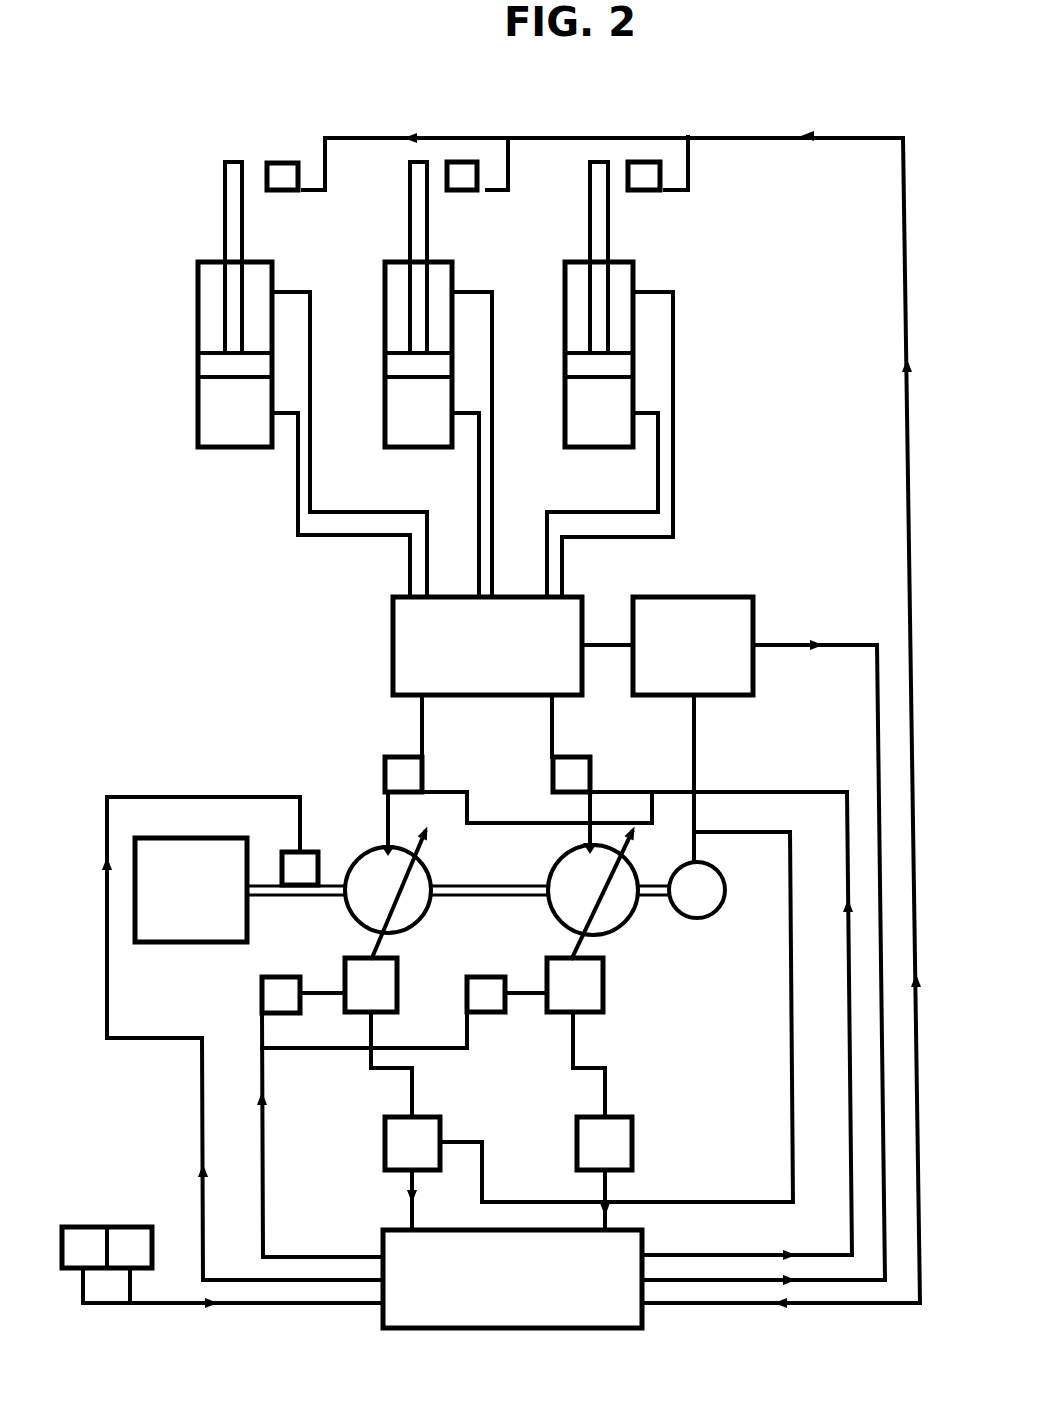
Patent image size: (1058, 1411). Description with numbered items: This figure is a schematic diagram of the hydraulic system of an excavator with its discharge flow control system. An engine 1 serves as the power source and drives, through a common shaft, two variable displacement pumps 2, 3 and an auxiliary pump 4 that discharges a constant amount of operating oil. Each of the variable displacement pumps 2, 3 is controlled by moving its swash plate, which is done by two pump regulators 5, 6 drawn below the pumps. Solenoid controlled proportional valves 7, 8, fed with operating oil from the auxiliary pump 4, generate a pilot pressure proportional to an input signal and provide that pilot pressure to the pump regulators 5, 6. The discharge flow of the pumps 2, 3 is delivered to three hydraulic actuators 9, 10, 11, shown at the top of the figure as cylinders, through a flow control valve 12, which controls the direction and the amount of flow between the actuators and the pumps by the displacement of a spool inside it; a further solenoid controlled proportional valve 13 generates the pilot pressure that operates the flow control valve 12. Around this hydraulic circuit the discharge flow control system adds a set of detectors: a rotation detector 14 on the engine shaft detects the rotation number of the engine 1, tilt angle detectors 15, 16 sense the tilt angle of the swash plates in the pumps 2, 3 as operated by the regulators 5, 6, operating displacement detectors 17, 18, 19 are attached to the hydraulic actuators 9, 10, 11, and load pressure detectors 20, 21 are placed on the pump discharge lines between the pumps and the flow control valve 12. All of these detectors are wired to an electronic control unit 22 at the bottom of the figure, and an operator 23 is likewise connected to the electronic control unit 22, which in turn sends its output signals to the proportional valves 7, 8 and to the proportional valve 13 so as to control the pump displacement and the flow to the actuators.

The engine 1 is at (178, 837).
The variable displacement pump 2 is at (430, 872).
The variable displacement pump 3 is at (611, 884).
The auxiliary pump 4 is at (725, 897).
The pump regulator 5 is at (397, 990).
The pump regulator 6 is at (603, 997).
The solenoid controlled proportional valve 7 is at (440, 1132).
The solenoid controlled proportional valve 8 is at (632, 1148).
The hydraulic actuator 9 is at (272, 282).
The hydraulic actuator 10 is at (452, 282).
The hydraulic actuator 11 is at (633, 277).
The flow control valve 12 is at (570, 597).
The solenoid controlled proportional valve 13 is at (740, 597).
The rotation detector 14 is at (302, 852).
The tilt angle detector 15 is at (262, 990).
The tilt angle detector 16 is at (485, 977).
The operating displacement detector 17 is at (283, 163).
The operating displacement detector 18 is at (467, 162).
The operating displacement detector 19 is at (650, 162).
The load pressure detector 20 is at (422, 760).
The load pressure detector 21 is at (590, 773).
The electronic control unit 22 is at (590, 1328).
The operator 23 is at (125, 1227).